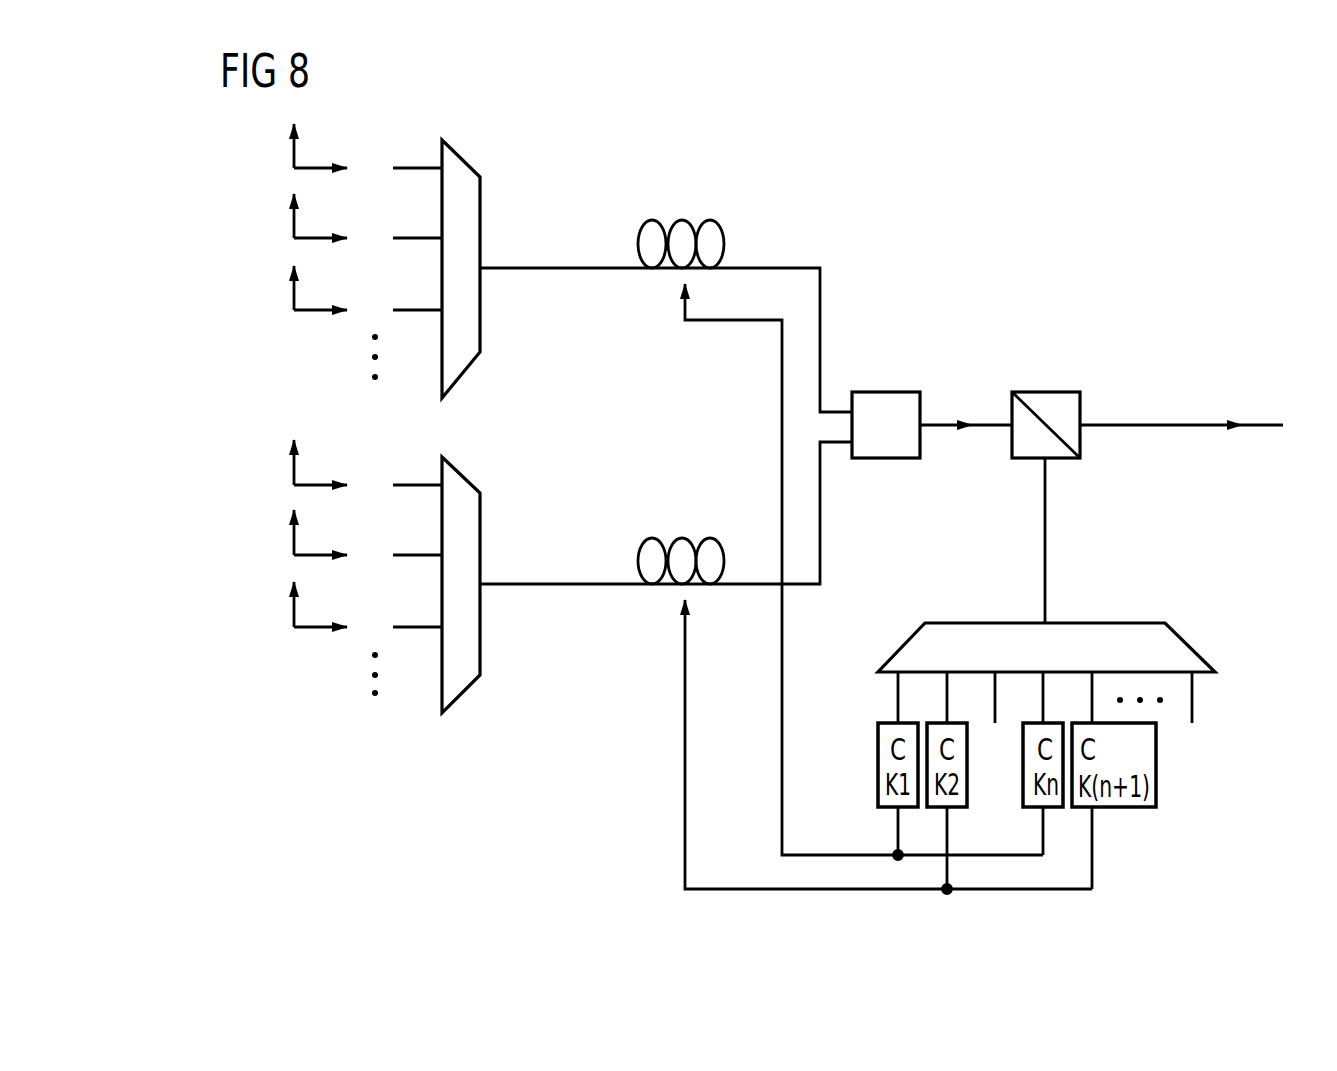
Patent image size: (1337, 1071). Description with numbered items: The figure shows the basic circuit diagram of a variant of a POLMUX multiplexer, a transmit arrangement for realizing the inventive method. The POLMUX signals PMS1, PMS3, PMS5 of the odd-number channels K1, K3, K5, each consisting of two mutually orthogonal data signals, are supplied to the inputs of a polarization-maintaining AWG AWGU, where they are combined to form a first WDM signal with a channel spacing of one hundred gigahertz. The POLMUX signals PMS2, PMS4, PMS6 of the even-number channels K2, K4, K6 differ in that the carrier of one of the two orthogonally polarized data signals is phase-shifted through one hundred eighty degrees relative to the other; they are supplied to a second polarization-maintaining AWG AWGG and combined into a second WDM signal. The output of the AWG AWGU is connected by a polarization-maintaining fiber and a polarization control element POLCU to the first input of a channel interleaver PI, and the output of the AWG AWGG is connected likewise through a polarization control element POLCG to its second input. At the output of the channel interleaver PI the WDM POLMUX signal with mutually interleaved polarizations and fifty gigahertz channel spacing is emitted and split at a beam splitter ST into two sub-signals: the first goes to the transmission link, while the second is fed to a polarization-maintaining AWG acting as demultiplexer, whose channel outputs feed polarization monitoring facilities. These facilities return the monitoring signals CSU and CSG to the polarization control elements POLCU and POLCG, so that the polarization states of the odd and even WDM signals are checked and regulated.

The POLMUX signal PMS1 is at (283, 148).
The POLMUX signal PMS2 is at (283, 464).
The POLMUX signal PMS3 is at (283, 218).
The POLMUX signal PMS4 is at (283, 534).
The POLMUX signal PMS5 is at (283, 290).
The POLMUX signal PMS6 is at (283, 606).
The odd-number channel K1 is at (400, 168).
The even-number channel K2 is at (400, 485).
The odd-number channel K3 is at (400, 238).
The even-number channel K4 is at (400, 555).
The odd-number channel K5 is at (400, 310).
The even-number channel K6 is at (400, 627).
The polarization-maintaining AWG AWGU is at (456, 150).
The polarization-maintaining AWG AWGG is at (456, 468).
The polarization control element POLCU is at (685, 220).
The polarization control element POLCG is at (685, 538).
The channel interleaver PI is at (889, 392).
The beam splitter ST is at (1047, 392).
The monitoring signal CSU is at (864, 572).
The monitoring signal CSG is at (888, 747).